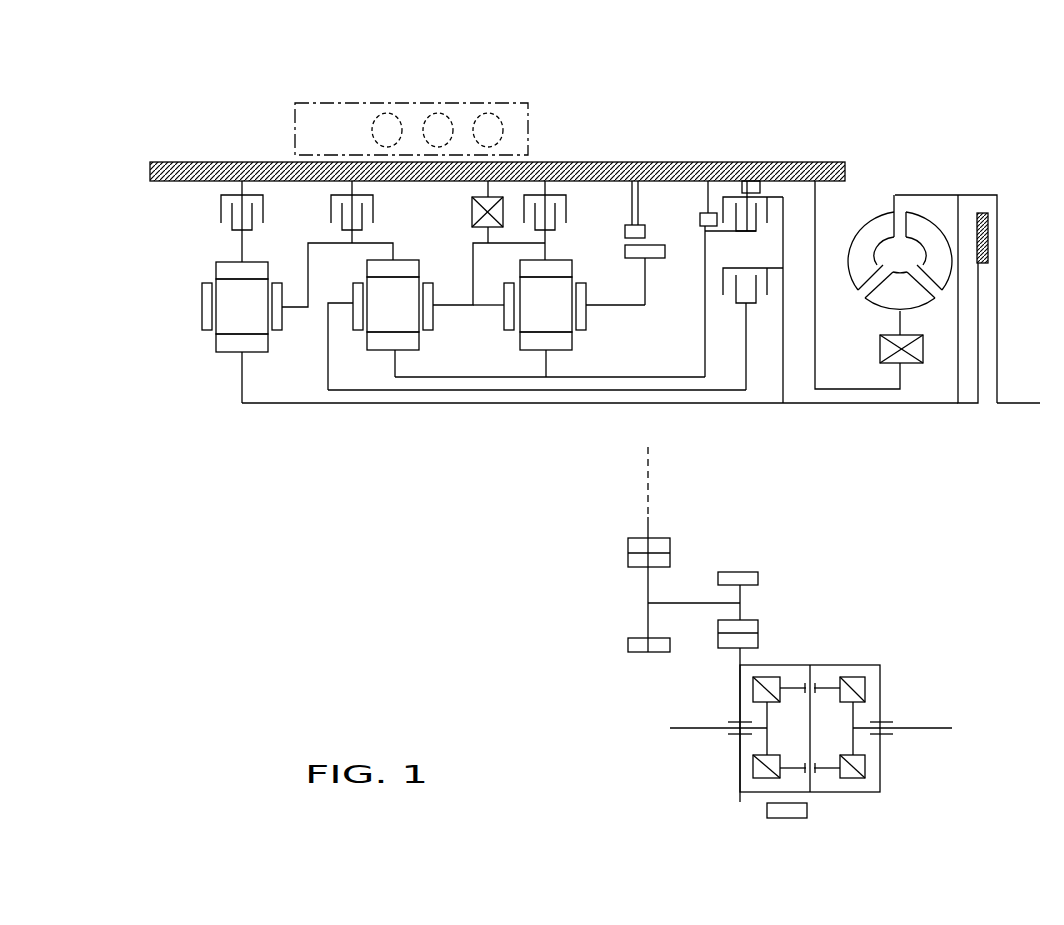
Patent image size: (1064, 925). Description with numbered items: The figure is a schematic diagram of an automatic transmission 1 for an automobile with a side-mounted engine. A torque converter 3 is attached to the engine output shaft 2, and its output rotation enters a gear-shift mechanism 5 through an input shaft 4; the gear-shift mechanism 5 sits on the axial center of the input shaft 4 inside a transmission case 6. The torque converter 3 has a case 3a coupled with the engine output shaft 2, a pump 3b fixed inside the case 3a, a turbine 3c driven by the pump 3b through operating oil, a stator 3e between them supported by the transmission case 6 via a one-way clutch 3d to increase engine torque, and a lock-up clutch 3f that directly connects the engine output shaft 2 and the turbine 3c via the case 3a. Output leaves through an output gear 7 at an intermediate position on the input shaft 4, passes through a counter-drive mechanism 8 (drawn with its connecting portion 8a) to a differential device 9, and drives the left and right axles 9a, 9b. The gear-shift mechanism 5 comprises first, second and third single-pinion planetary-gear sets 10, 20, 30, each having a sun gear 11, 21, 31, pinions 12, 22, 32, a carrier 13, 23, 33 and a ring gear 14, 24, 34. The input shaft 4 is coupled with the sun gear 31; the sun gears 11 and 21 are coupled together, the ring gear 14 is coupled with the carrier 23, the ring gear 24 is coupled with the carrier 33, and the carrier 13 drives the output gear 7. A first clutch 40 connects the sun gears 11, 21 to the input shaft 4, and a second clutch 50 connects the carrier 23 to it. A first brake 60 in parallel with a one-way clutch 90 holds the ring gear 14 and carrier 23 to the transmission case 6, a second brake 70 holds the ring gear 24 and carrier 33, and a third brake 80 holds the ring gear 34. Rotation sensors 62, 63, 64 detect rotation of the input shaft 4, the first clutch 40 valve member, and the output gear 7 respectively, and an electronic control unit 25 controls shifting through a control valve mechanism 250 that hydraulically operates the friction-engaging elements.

The automatic transmission 1 is at (1000, 168).
The engine output shaft 2 is at (1013, 402).
The torque converter 3 is at (966, 192).
The case 3a is at (916, 194).
The pump 3b is at (862, 230).
The turbine 3c is at (933, 226).
The one-way clutch 3d is at (920, 360).
The stator 3e is at (916, 308).
The lock-up clutch 3f is at (990, 240).
The input shaft 4 is at (802, 405).
The gear-shift mechanism 5 is at (745, 411).
The transmission case 6 is at (770, 176).
The output gear 7 is at (648, 245).
The counter-drive mechanism 8 is at (743, 567).
The connecting shaft 8a is at (678, 603).
The differential device 9 is at (832, 662).
The axle 9a is at (684, 740).
The axle 9b is at (937, 740).
The first planetary-gear set 10 is at (540, 297).
The sun gear 11 is at (531, 350).
The pinion 12 is at (530, 320).
The carrier 13 is at (504, 310).
The ring gear 14 is at (520, 268).
The second planetary-gear set 20 is at (379, 306).
The sun gear 21 is at (386, 345).
The pinion 22 is at (378, 322).
The carrier 23 is at (358, 318).
The ring gear 24 is at (367, 268).
The electronic control unit 25 is at (530, 104).
The control valve mechanism 250 is at (476, 120).
The third planetary-gear set 30 is at (239, 306).
The sun gear 31 is at (238, 345).
The pinion 32 is at (228, 318).
The carrier 33 is at (205, 310).
The ring gear 34 is at (216, 267).
The first clutch 40 is at (745, 230).
The second clutch 50 is at (753, 297).
The first brake 60 is at (568, 210).
The rotation sensor 62 is at (750, 180).
The rotation sensor 63 is at (699, 227).
The rotation sensor 64 is at (638, 222).
The second brake 70 is at (373, 210).
The third brake 80 is at (264, 210).
The one-way clutch 90 is at (472, 213).